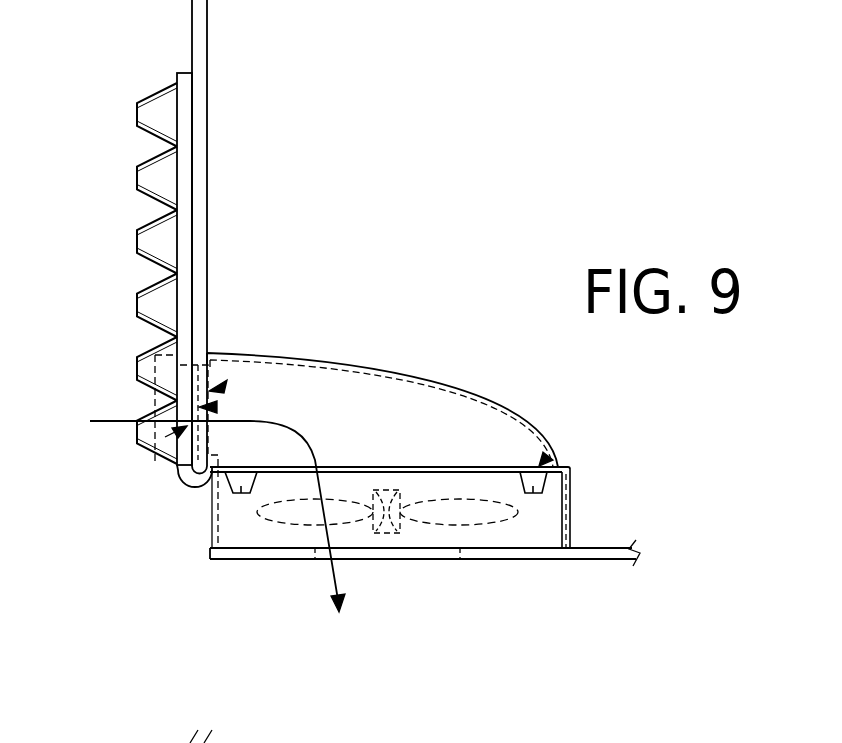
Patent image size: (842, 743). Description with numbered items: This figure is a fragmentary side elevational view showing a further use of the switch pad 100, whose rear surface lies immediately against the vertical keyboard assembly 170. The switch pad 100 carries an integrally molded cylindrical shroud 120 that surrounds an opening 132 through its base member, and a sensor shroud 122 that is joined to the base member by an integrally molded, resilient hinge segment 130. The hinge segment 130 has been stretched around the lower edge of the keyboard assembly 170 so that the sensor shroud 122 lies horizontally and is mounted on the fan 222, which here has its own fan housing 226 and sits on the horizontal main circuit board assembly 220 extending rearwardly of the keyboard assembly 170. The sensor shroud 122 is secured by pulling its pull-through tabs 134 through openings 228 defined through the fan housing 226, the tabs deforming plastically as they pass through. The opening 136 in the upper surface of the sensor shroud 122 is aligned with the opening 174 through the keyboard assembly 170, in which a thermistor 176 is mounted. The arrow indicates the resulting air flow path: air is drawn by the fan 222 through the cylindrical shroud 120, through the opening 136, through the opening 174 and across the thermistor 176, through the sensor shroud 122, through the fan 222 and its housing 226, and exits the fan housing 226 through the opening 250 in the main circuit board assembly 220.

The switch pad 100 is at (186, 272).
The keyboard assembly 170 is at (198, 179).
The cylindrical shroud 120 is at (163, 399).
The opening 132 is at (165, 437).
The hinge segment 130 is at (200, 489).
The pull-through tabs 134 is at (241, 493).
The thermistor 176 is at (215, 383).
The opening 136 is at (224, 387).
The opening 174 is at (215, 407).
The sensor shroud 122 is at (400, 402).
The fan 222 is at (480, 505).
The openings 228 is at (548, 455).
The fan housing 226 is at (571, 508).
The main circuit board assembly 220 is at (603, 560).
The opening 250 is at (397, 552).